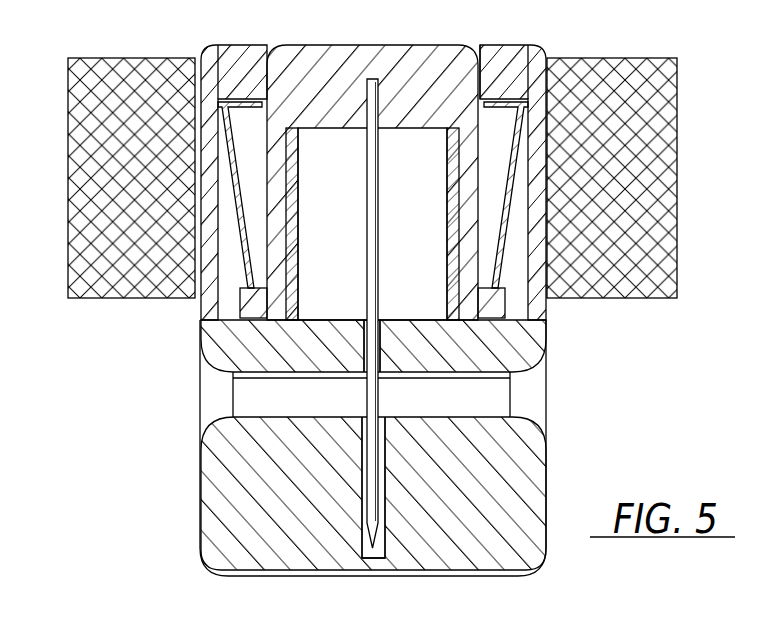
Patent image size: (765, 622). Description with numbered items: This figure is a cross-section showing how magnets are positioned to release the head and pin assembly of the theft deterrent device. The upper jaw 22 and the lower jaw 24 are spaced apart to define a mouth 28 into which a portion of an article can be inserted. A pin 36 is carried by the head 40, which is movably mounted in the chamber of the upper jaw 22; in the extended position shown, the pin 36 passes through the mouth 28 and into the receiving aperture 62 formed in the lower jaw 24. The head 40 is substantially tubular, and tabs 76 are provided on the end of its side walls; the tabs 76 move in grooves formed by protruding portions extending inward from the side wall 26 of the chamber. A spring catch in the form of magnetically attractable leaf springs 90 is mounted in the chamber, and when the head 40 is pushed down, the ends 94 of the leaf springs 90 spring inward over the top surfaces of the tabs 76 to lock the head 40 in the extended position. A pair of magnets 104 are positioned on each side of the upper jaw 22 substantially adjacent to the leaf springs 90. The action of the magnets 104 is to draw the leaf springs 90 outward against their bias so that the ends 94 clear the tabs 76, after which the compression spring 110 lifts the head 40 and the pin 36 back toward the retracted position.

The upper jaw 22 is at (235, 365).
The lower jaw 24 is at (200, 520).
The side wall 26 is at (547, 60).
The mouth 28 is at (498, 397).
The pin 36 is at (378, 250).
The head 40 is at (450, 46).
The receiving aperture 62 is at (387, 556).
The tabs 76 is at (212, 333).
The leaf spring 90 is at (251, 275).
The ends of the leaf springs 94 is at (247, 307).
The magnets 104 is at (83, 260).
The compression spring 110 is at (298, 282).